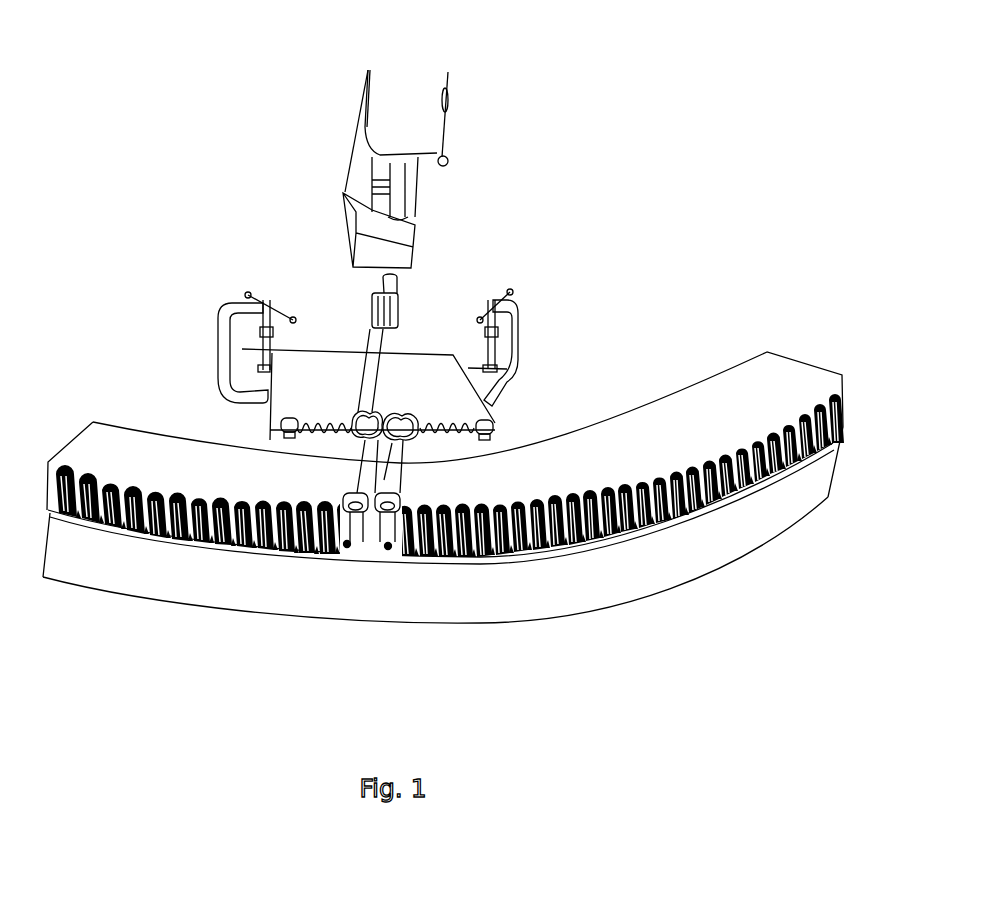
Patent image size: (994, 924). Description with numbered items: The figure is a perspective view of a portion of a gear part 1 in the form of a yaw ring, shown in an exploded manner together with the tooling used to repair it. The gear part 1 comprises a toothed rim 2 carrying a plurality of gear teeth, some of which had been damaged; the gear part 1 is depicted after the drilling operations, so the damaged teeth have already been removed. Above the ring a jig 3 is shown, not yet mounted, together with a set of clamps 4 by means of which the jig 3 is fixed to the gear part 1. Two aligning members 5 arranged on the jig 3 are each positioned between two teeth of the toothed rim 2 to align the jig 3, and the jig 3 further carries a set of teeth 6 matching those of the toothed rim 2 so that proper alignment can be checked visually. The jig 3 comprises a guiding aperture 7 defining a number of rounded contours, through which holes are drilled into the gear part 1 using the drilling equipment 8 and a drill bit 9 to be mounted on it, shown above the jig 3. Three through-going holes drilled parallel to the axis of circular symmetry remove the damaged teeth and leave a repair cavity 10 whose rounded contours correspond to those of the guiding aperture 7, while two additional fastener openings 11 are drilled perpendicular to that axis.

The gear part 1 is at (683, 392).
The toothed rim 2 is at (717, 510).
The jig 3 is at (410, 372).
The clamps 4 is at (220, 348).
The aligning members 5 is at (273, 423).
The teeth 6 is at (340, 435).
The guiding aperture 7 is at (363, 413).
The drilling equipment 8 is at (422, 123).
The drill bit 9 is at (397, 300).
The repair cavity 10 is at (370, 550).
The fastener openings 11 is at (345, 548).